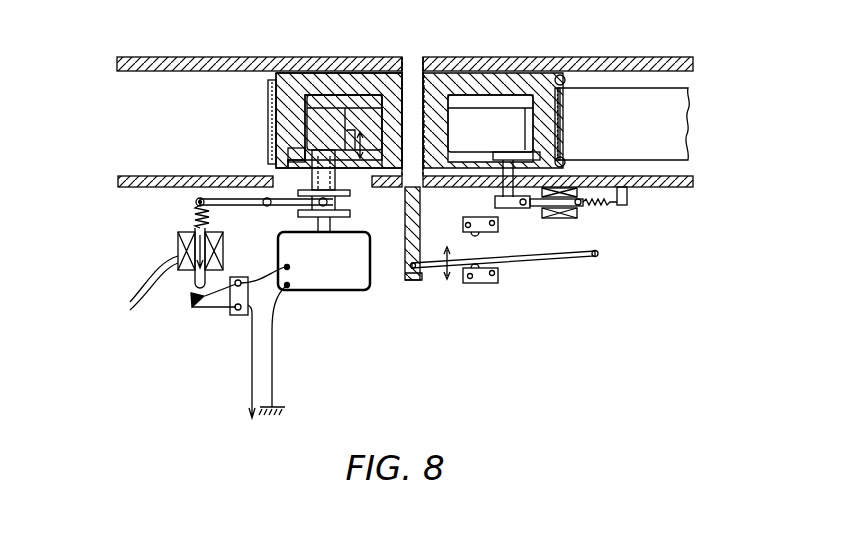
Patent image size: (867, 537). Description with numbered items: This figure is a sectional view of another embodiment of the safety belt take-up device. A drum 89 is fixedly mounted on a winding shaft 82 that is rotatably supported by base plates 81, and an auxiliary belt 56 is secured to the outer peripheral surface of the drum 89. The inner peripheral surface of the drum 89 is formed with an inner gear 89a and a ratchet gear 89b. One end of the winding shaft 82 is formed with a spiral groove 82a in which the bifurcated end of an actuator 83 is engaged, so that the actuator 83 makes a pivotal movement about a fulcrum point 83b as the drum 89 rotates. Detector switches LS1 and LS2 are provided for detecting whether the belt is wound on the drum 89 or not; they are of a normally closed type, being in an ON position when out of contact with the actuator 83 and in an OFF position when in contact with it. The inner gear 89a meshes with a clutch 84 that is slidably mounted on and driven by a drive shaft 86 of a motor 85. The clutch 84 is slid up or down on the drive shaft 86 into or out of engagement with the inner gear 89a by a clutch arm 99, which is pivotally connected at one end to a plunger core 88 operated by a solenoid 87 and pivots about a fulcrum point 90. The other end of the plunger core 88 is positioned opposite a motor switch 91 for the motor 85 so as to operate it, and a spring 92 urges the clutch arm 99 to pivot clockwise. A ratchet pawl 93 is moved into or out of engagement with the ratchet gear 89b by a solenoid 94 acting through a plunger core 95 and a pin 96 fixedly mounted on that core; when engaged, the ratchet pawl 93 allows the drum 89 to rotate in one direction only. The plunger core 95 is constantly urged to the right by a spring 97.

The auxiliary belt 56 is at (688, 124).
The base plates 81 is at (150, 57).
The winding shaft 82 is at (413, 57).
The spiral groove 82a is at (407, 248).
The actuator 83 is at (540, 258).
The fulcrum point 83b is at (598, 258).
The clutch 84 is at (325, 131).
The motor 85 is at (323, 291).
The drive shaft 86 is at (336, 226).
The solenoid 87 is at (177, 250).
The plunger core 88 is at (194, 278).
The drum 89 is at (510, 78).
The inner gear 89a is at (300, 124).
The ratchet gear 89b is at (288, 154).
The fulcrum point 90 is at (266, 207).
The motor switch 91 is at (233, 315).
The spring 92 is at (194, 215).
The ratchet pawl 93 is at (505, 152).
The solenoid 94 is at (565, 219).
The plunger core 95 is at (542, 208).
The pin 96 is at (496, 197).
The spring 97 is at (606, 204).
The clutch arm 99 is at (220, 198).
The detector switch LS1 is at (487, 237).
The detector switch LS2 is at (487, 287).